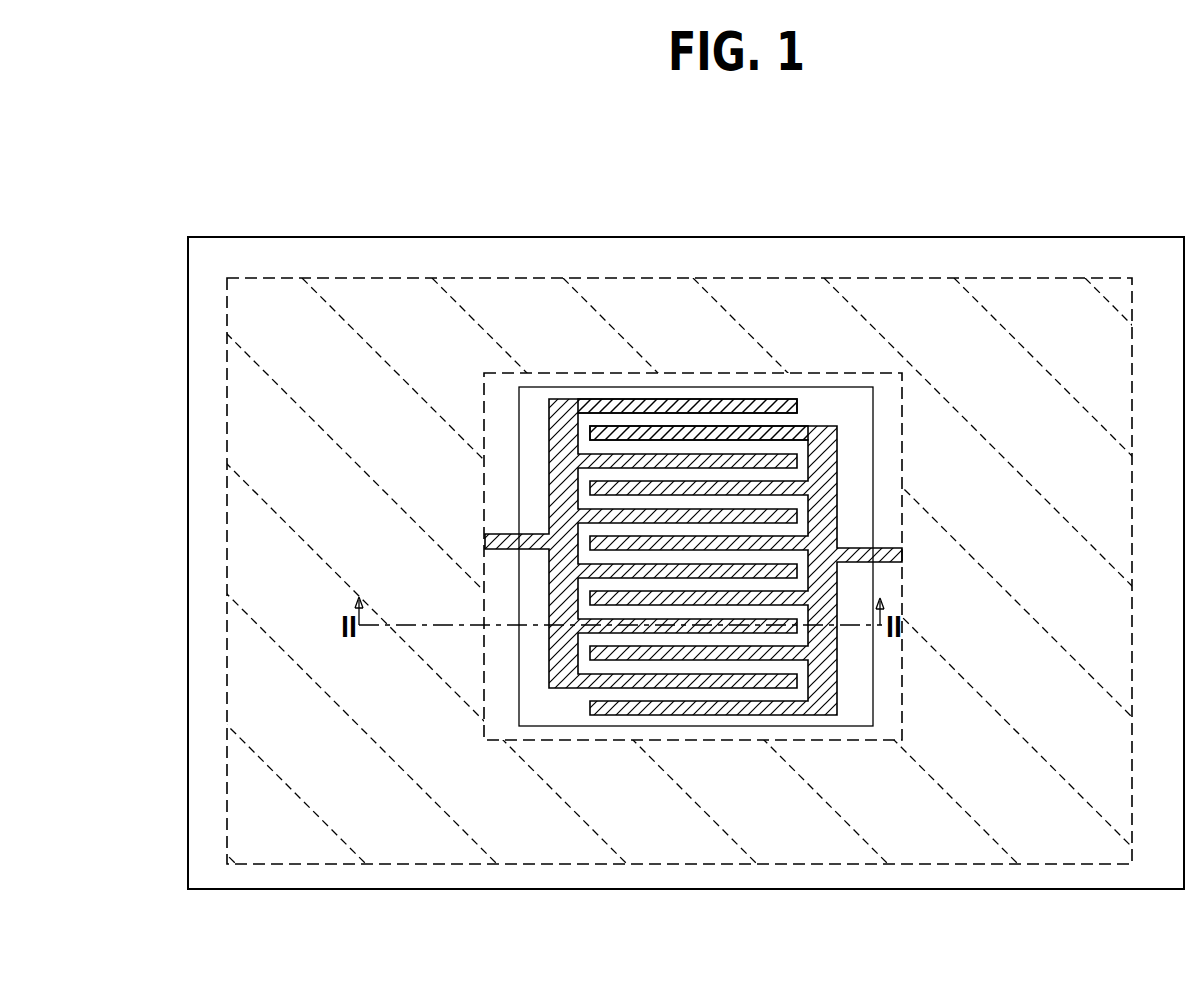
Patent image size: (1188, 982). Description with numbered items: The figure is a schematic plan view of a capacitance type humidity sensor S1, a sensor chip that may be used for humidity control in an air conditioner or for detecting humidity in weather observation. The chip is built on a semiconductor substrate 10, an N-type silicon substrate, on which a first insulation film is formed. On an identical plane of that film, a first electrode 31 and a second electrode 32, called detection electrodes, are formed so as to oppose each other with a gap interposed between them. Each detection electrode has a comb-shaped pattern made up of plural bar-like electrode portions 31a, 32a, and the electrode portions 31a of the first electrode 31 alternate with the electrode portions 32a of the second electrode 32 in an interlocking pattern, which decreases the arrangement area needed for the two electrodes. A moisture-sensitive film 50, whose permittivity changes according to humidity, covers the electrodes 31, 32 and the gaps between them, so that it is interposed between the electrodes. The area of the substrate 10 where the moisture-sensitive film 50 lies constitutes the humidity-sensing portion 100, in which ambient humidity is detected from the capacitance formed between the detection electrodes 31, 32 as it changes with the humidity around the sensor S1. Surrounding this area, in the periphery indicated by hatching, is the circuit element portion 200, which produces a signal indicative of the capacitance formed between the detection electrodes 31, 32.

The humidity sensor S1 is at (1070, 196).
The semiconductor substrate 10 is at (985, 237).
The circuit element portion 200 is at (424, 277).
The humidity-sensing portion 100 is at (848, 412).
The moisture-sensitive film 50 is at (682, 386).
The first electrode 31 is at (560, 397).
The electrode portion 31a is at (625, 398).
The second electrode 32 is at (817, 425).
The electrode portion 32a is at (758, 432).